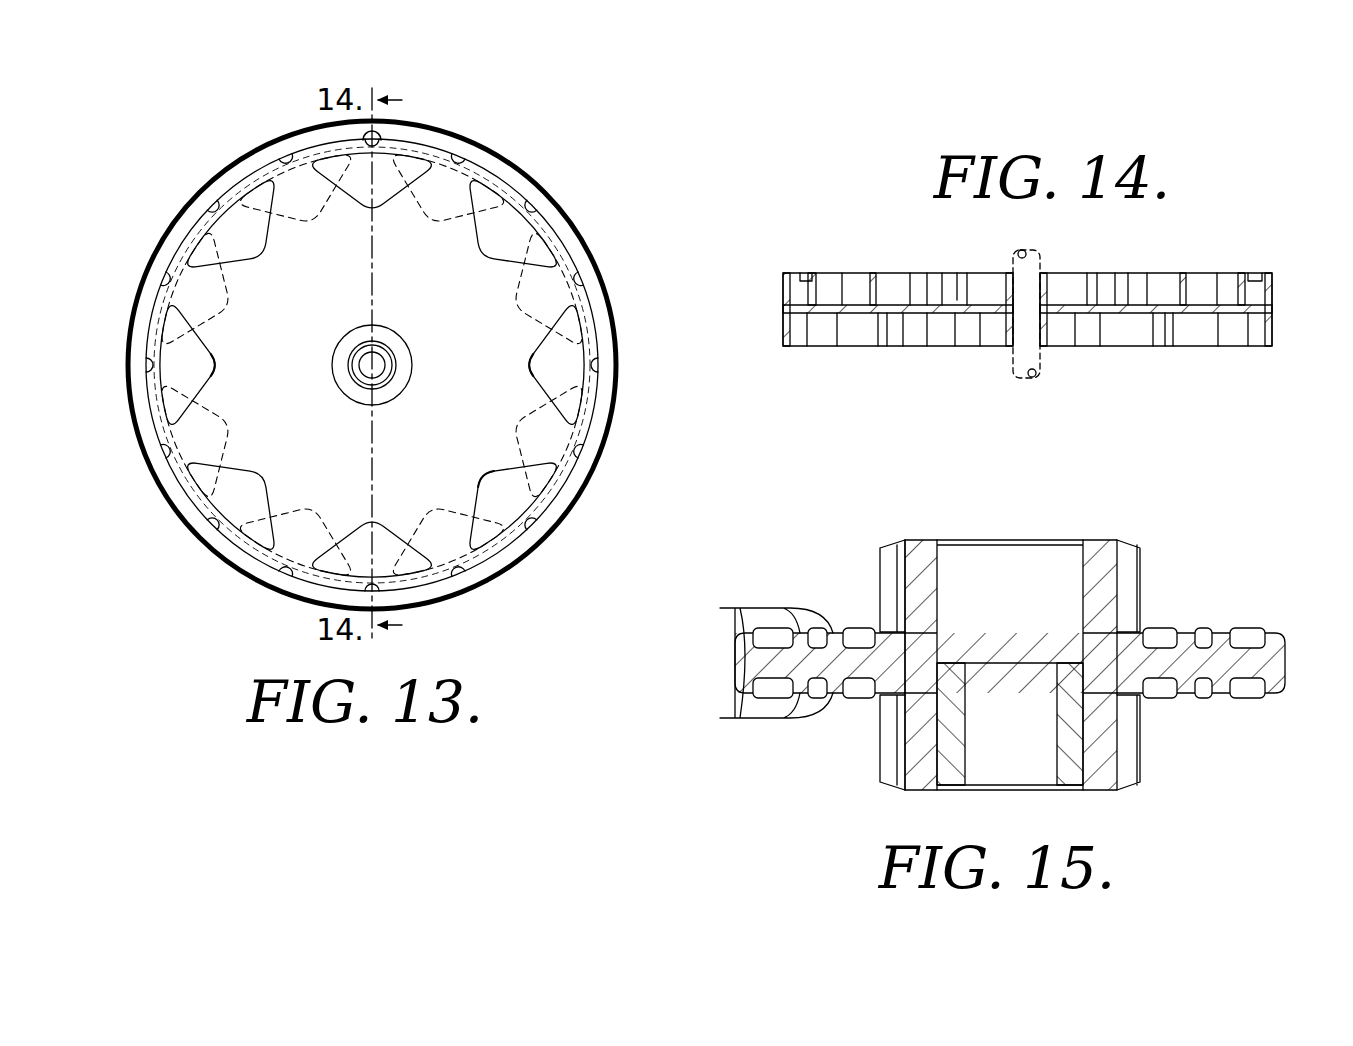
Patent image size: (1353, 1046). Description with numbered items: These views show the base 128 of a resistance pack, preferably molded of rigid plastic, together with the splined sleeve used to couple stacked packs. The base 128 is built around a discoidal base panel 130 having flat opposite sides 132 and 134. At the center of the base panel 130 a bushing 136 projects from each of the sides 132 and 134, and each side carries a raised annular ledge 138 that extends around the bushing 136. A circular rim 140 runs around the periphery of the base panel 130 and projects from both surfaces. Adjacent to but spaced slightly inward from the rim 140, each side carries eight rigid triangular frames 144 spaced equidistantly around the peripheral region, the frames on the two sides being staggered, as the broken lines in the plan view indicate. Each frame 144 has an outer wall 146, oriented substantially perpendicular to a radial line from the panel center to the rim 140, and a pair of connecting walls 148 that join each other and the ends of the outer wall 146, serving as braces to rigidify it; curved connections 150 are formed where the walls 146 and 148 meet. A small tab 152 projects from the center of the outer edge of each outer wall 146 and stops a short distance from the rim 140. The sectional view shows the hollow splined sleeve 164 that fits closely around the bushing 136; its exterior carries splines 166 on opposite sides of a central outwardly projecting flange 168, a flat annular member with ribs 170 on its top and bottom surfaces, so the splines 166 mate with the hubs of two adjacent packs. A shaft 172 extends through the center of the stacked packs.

In FIG. 13, the base 128 is at (590, 242).
In FIG. 14, the base 128 is at (1276, 296).
In FIG. 13, the base panel 130 is at (515, 342).
In FIG. 14, the base panel 130 is at (1204, 318).
In FIG. 14, the side 132 is at (893, 300).
In FIG. 14, the side 134 is at (920, 318).
In FIG. 13, the bushing 136 is at (377, 350).
In FIG. 14, the bushing 136 is at (1046, 288).
In FIG. 13, the raised annular ledge 138 is at (405, 362).
In FIG. 13, the circular rim 140 is at (605, 266).
In FIG. 14, the circular rim 140 is at (1274, 340).
In FIG. 13, the rigid triangular frame 144 is at (321, 226).
In FIG. 14, the rigid triangular frame 144 is at (829, 276).
In FIG. 13, the outer wall 146 is at (395, 150).
In FIG. 13, the connecting wall 148 is at (222, 360).
In FIG. 13, the curved connection 150 is at (176, 248).
In FIG. 13, the tab 152 is at (292, 152).
In FIG. 15, the splined sleeve 164 is at (1133, 540).
In FIG. 15, the splines 166 is at (886, 583).
In FIG. 15, the flange 168 is at (1185, 660).
In FIG. 15, the ribs 170 is at (738, 614).
In FIG. 14, the shaft 172 is at (1036, 372).